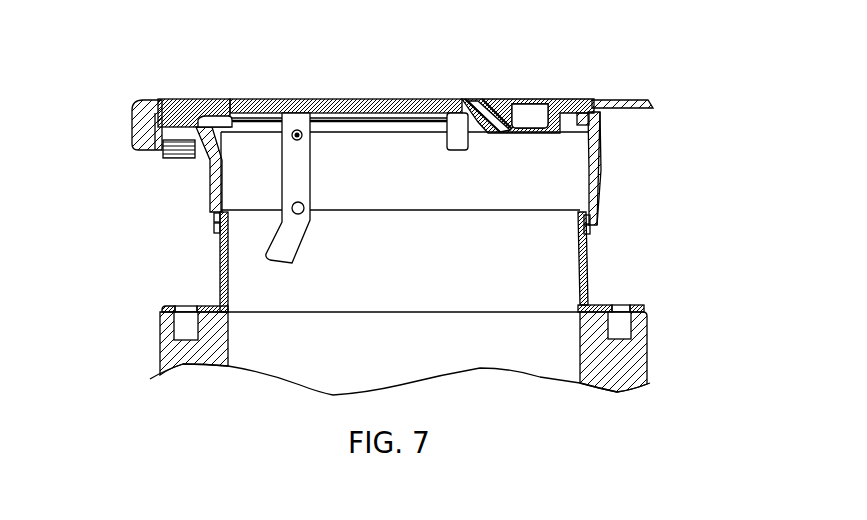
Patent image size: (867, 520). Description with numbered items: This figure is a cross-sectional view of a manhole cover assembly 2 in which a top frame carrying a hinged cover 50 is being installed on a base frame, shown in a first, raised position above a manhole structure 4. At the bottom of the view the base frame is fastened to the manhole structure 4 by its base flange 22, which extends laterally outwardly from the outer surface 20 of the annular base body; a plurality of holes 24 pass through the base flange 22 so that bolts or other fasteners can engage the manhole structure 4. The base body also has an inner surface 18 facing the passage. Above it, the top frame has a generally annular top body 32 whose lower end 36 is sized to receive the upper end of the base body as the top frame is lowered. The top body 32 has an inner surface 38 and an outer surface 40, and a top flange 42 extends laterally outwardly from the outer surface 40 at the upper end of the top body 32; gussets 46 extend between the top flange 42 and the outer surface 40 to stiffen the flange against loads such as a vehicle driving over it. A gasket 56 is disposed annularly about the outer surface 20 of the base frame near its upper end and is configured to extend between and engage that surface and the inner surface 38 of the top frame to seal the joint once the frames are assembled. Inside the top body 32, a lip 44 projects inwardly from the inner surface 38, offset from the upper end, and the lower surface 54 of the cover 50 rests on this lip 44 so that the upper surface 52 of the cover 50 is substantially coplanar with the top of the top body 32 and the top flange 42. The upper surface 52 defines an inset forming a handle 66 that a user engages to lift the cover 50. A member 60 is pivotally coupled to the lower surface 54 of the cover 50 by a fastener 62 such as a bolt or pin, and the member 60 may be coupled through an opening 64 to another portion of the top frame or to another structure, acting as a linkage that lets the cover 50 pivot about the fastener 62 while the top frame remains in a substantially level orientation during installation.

The manhole cover assembly 2 is at (104, 80).
The manhole structure 4 is at (660, 366).
The inner surface 18 is at (229, 277).
The outer surface 20 is at (585, 257).
The base flange 22 is at (604, 300).
The holes 24 is at (187, 308).
The top body 32 is at (596, 156).
The lower end 36 is at (216, 227).
The inner surface 38 is at (590, 173).
The outer surface 40 is at (598, 183).
The top flange 42 is at (634, 106).
The lip 44 is at (221, 122).
The gussets 46 is at (607, 118).
The cover 50 is at (392, 102).
The upper surface 52 is at (480, 98).
The lower surface 54 is at (406, 112).
The gasket 56 is at (217, 238).
The member 60 is at (305, 172).
The fastener 62 is at (302, 138).
The opening 64 is at (304, 207).
The handle 66 is at (523, 110).